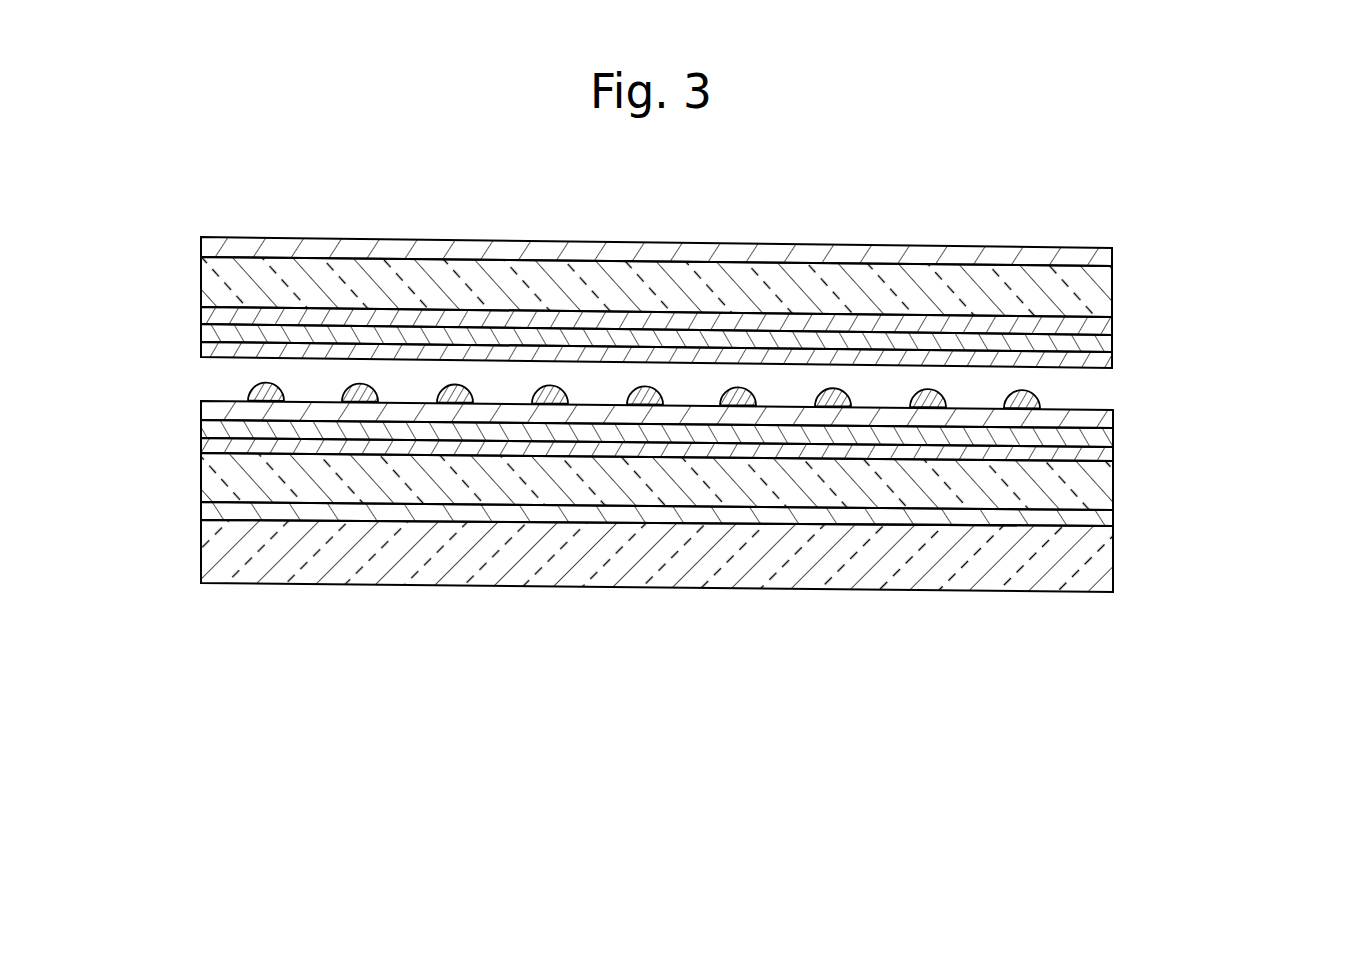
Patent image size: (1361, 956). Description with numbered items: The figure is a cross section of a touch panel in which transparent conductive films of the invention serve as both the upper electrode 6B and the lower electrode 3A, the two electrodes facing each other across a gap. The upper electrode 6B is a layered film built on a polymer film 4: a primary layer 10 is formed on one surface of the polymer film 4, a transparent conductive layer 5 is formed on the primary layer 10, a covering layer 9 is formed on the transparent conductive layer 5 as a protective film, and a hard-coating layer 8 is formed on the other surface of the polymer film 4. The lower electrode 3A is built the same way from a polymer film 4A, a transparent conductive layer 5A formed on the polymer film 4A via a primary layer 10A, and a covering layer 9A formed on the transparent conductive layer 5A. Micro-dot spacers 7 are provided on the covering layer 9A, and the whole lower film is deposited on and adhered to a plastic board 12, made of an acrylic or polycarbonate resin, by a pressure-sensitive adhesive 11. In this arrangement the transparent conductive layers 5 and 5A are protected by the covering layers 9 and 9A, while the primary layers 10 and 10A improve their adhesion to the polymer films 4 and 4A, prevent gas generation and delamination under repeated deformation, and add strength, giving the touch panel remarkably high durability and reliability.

The lower electrode 3A is at (773, 533).
The polymer film 4 is at (1113, 283).
The polymer film 4A is at (1113, 497).
The transparent conductive layer 5 is at (1113, 345).
The transparent conductive layer 5A is at (1113, 445).
The upper electrode 6B is at (772, 261).
The micro-dot spacers 7 is at (247, 386).
The hard-coating layer 8 is at (1112, 248).
The covering layer 9 is at (700, 362).
The covering layer 9A is at (1113, 418).
The primary layer 10 is at (1113, 323).
The primary layer 10A is at (1113, 462).
The pressure-sensitive adhesive 11 is at (1113, 523).
The plastic board 12 is at (711, 592).